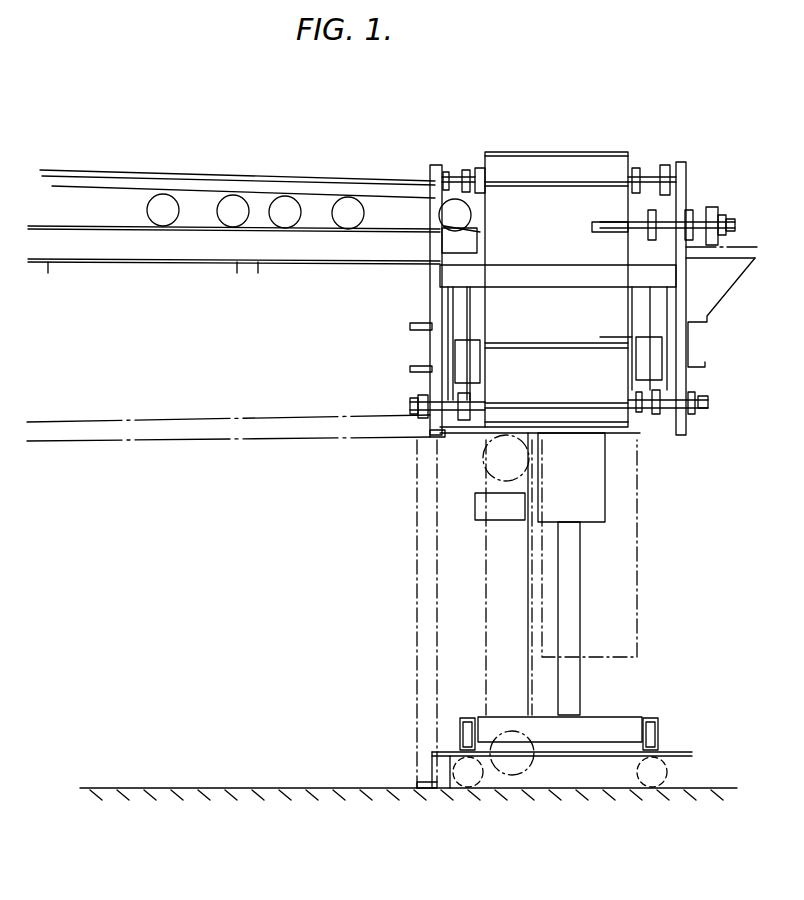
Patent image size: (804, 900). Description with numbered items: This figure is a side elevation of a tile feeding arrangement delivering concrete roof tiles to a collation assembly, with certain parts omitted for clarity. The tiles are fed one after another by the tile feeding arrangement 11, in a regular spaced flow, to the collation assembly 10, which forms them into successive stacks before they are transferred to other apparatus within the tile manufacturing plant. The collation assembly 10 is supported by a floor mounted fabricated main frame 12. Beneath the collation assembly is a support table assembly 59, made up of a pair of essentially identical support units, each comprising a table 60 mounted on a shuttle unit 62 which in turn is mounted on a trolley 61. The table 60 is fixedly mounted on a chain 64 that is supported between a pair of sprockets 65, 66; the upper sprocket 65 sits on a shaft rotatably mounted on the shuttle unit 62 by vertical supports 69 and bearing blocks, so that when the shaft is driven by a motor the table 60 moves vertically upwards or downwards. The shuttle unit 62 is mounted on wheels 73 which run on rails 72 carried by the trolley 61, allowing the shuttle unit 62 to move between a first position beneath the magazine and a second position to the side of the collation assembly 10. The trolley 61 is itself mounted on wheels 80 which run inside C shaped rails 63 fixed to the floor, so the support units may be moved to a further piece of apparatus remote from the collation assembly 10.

The collation assembly 10 is at (556, 128).
The tile feeding arrangement 11 is at (197, 148).
The main frame 12 is at (684, 173).
The support table assembly 59 is at (648, 566).
The table 60 is at (590, 508).
The trolley 61 is at (595, 757).
The shuttle unit 62 is at (603, 717).
The C shaped rails 63 is at (672, 757).
The chain 64 is at (486, 556).
The upper sprocket 65 is at (484, 457).
The lower sprocket 66 is at (512, 770).
The vertical supports 69 is at (573, 643).
The rails 72 is at (646, 718).
The wheels 73 is at (468, 733).
The wheels 80 is at (468, 787).